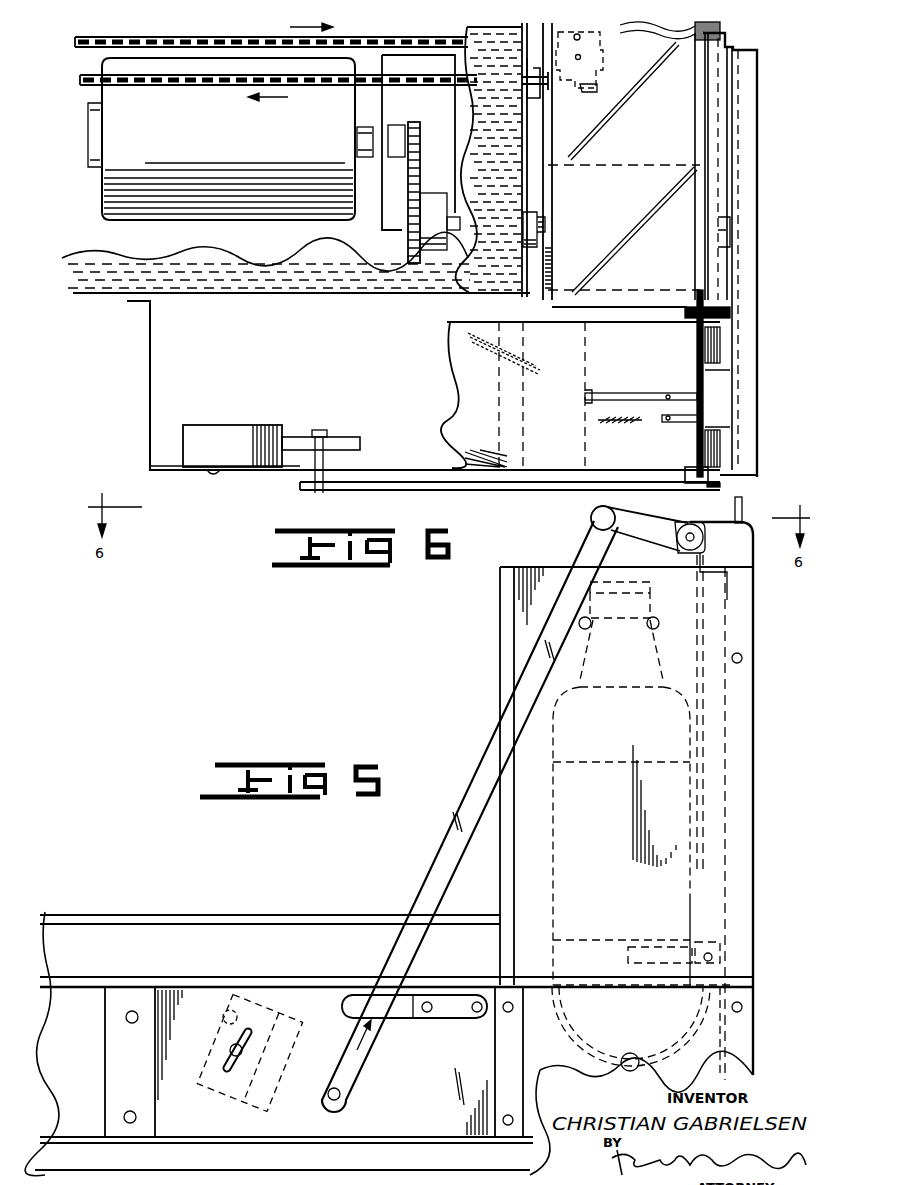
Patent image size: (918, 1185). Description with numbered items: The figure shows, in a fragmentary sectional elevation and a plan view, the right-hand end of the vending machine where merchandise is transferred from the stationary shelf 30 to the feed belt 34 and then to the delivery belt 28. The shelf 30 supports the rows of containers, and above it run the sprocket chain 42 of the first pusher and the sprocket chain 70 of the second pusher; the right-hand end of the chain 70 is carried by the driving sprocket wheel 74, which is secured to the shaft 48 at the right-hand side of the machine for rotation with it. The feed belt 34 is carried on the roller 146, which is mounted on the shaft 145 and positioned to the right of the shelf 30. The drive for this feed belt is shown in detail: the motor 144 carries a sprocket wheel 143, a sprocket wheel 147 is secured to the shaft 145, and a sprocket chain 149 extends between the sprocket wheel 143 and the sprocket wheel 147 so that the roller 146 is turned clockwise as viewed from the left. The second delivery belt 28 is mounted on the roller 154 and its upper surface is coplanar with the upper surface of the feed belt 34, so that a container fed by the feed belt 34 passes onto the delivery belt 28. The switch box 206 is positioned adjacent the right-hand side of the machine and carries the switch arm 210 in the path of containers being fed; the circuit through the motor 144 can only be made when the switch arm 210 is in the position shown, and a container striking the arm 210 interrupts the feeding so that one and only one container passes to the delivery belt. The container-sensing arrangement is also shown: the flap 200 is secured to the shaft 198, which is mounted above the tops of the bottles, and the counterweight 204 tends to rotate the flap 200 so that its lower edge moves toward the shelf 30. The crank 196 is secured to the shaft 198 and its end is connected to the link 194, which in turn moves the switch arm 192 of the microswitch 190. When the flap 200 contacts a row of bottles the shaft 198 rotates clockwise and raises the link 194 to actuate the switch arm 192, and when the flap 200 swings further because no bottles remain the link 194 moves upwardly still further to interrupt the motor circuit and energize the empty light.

In FIG. 6, the sprocket chain 70 is at (205, 40).
In FIG. 6, the sprocket chain 42 is at (215, 88).
In FIG. 6, the motor 144 is at (315, 212).
In FIG. 6, the sprocket chain 149 is at (354, 173).
In FIG. 6, the sprocket wheel 143 is at (420, 132).
In FIG. 6, the sprocket wheel 147 is at (420, 192).
In FIG. 6, the shelf 30 is at (275, 275).
In FIG. 6, the delivery belt 28 is at (447, 352).
In FIG. 6, the microswitch 190 is at (232, 424).
In FIG. 5, the microswitch 190 is at (267, 1108).
In FIG. 6, the switch arm 192 is at (354, 440).
In FIG. 5, the switch arm 192 is at (350, 1093).
In FIG. 6, the link 194 is at (490, 495).
In FIG. 5, the link 194 is at (487, 742).
In FIG. 6, the roller 146 is at (550, 302).
In FIG. 6, the shaft 145 is at (540, 230).
In FIG. 6, the roller 154 is at (590, 419).
In FIG. 5, the roller 154 is at (593, 1045).
In FIG. 6, the switch arm 210 is at (620, 392).
In FIG. 6, the shaft 198 is at (693, 445).
In FIG. 5, the shaft 198 is at (690, 570).
In FIG. 6, the crank 196 is at (720, 487).
In FIG. 5, the crank 196 is at (642, 523).
In FIG. 6, the switch box 206 is at (725, 388).
In FIG. 6, the counterweight 204 is at (760, 85).
In FIG. 5, the counterweight 204 is at (748, 505).
In FIG. 6, the flap 200 is at (677, 143).
In FIG. 5, the flap 200 is at (700, 788).
In FIG. 6, the feed belt 34 is at (722, 31).
In FIG. 6, the driving sprocket wheel 74 is at (605, 55).
In FIG. 6, the shaft 48 is at (590, 95).